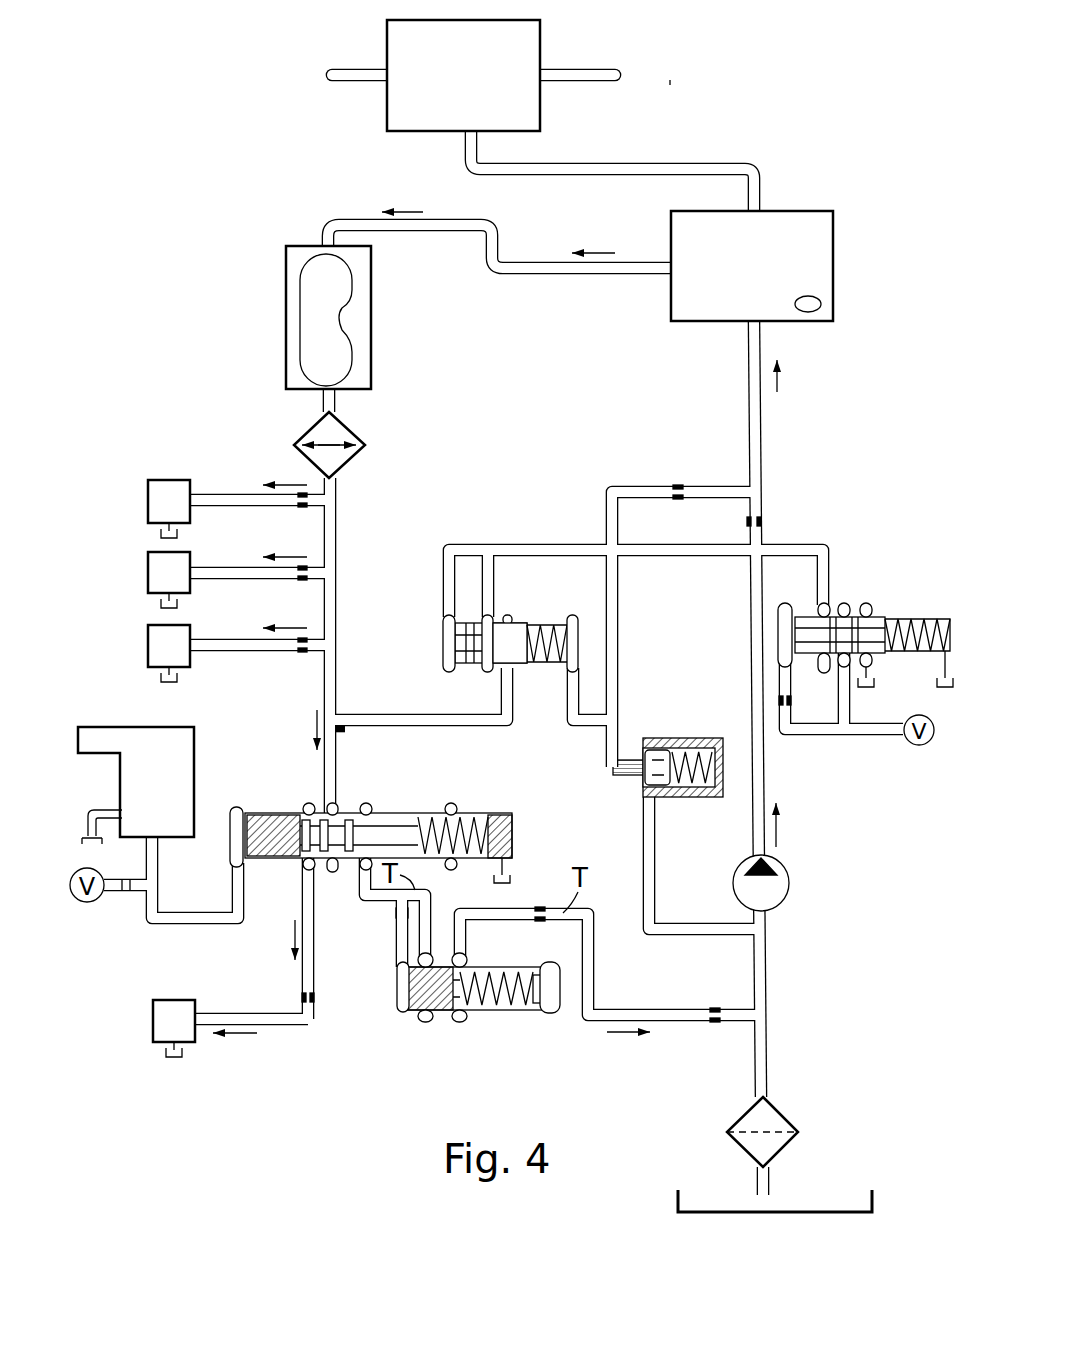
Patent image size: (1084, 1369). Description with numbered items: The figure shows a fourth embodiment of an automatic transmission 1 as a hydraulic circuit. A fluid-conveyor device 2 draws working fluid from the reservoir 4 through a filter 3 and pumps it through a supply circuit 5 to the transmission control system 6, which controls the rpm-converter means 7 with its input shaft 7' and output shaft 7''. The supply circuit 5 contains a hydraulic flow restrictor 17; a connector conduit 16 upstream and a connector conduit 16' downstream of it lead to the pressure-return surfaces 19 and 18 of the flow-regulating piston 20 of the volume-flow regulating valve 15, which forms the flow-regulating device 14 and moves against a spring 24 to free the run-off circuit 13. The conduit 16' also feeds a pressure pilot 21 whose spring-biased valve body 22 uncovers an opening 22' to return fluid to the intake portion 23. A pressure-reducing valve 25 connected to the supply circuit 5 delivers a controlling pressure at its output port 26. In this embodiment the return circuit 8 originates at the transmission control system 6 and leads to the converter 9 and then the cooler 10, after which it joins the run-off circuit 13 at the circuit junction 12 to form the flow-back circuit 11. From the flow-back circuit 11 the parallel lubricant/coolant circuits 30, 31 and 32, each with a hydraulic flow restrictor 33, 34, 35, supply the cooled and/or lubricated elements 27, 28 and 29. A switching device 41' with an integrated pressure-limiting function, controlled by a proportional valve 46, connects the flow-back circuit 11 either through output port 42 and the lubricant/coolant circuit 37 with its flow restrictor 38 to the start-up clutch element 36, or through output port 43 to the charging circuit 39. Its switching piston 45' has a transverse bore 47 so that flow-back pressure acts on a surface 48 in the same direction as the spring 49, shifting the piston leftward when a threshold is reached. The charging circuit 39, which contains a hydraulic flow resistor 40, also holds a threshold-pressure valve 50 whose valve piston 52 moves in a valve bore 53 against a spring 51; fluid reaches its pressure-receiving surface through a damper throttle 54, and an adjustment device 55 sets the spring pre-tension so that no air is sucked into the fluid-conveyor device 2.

The automatic transmission 1 is at (710, 110).
The fluid-conveyor device 2 is at (775, 888).
The filter 3 is at (772, 1122).
The reservoir 4 is at (173, 531).
The supply circuit 5 is at (792, 532).
The transmission control system 6 is at (752, 266).
The rpm-converter means 7 is at (463, 75).
The input shaft 7' is at (358, 37).
The output shaft 7'' is at (577, 37).
The return circuit 8 is at (538, 265).
The converter 9 is at (358, 316).
The cooler 10 is at (338, 433).
The flow-back circuit 11 is at (348, 712).
The circuit junction 12 is at (350, 740).
The run-off circuit 13 is at (435, 722).
The flow-regulating device 14 is at (556, 690).
The volume-flow regulating valve 15 is at (550, 673).
The connector conduit 16 is at (602, 546).
The connector conduit 16' is at (684, 486).
The hydraulic flow restrictor 17 is at (768, 522).
The pressure-return surface 18 is at (527, 665).
The pressure-return surface 19 is at (445, 635).
The flow-regulating piston 20 is at (515, 630).
The pressure pilot 21 is at (672, 719).
The valve body 22 is at (646, 733).
The opening 22' is at (609, 687).
The intake portion 23 is at (763, 920).
The spring 24 is at (547, 625).
The pressure-reducing valve 25 is at (852, 600).
The output port 26 is at (827, 673).
The cooled element 27 is at (169, 501).
The cooled and lubricated element 28 is at (169, 572).
The cooled and lubricated element 29 is at (169, 646).
The lubricant/coolant circuit 30 is at (237, 498).
The lubricant/coolant circuit 31 is at (238, 570).
The lubricant/coolant circuit 32 is at (248, 648).
The hydraulic flow restrictor 33 is at (303, 508).
The hydraulic flow restrictor 34 is at (303, 580).
The hydraulic flow restrictor 35 is at (303, 652).
The cooled and/or lubricated element 36 is at (174, 1021).
The lubricant/coolant circuit 37 is at (242, 1007).
The hydraulic flow restrictor 38 is at (313, 1000).
The charging circuit 39 is at (605, 1000).
The hydraulic flow resistor 40 is at (715, 1030).
The switching device 41' is at (340, 915).
The output port 42 is at (303, 863).
The output port 43 is at (363, 863).
The switching piston 45' is at (257, 806).
The proportional valve 46 is at (136, 785).
The transverse bore 47 is at (305, 808).
The surface 48 is at (272, 857).
The spring 49 is at (371, 859).
The threshold-pressure valve 50 is at (502, 1029).
The spring 51 is at (533, 1005).
The valve piston 52 is at (458, 1010).
The valve bore 53 is at (410, 1008).
The damper throttle 54 is at (397, 915).
The adjustment device 55 is at (555, 1010).